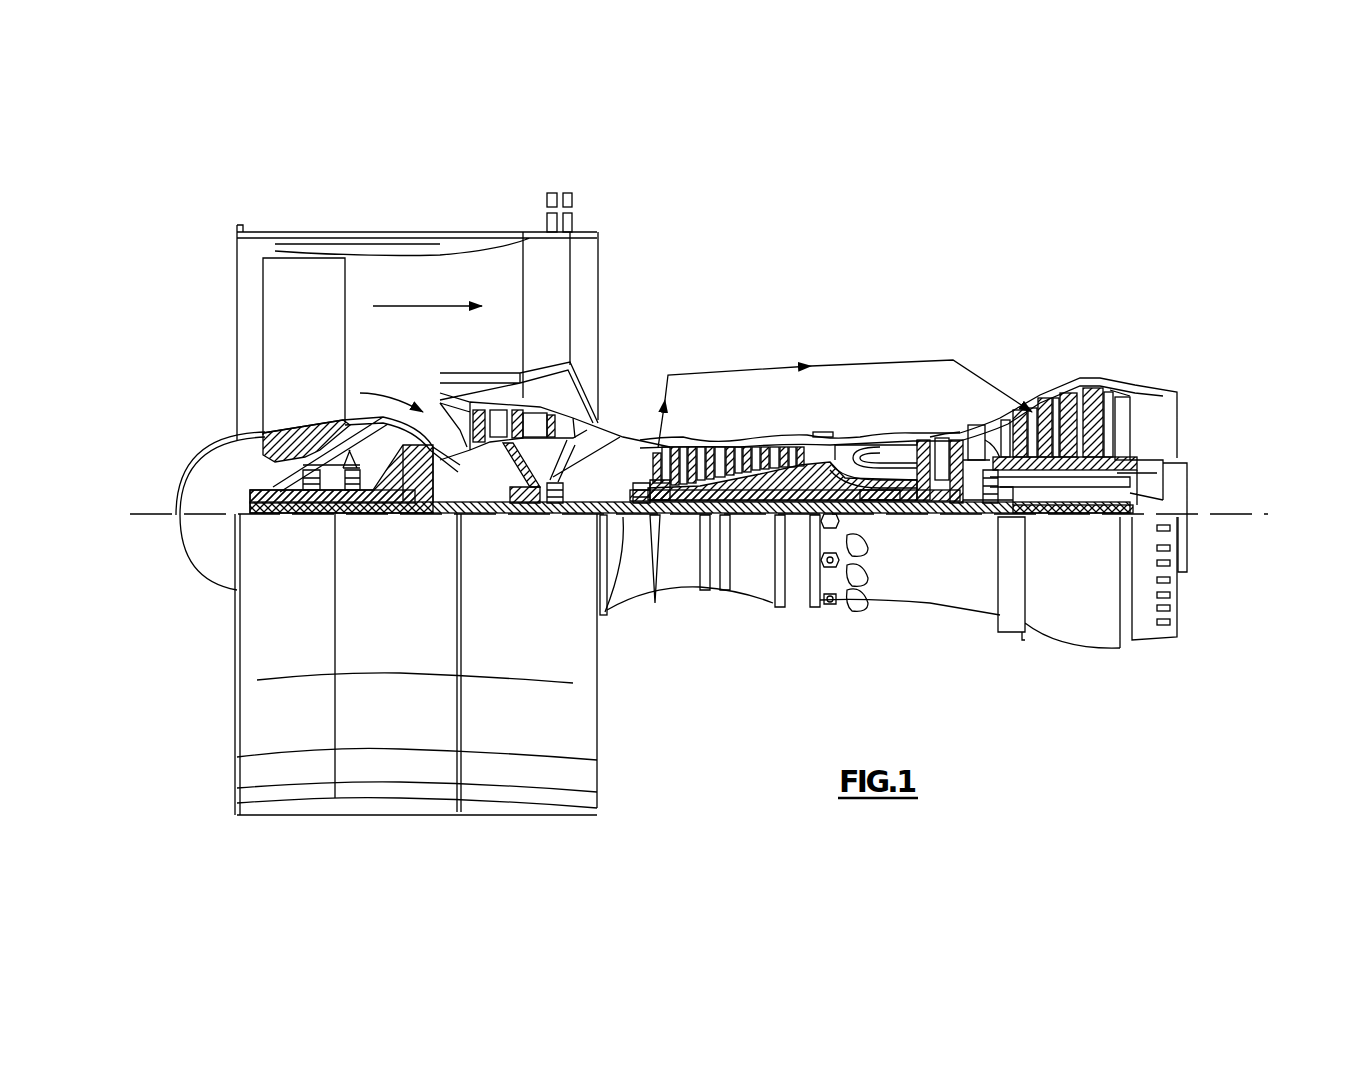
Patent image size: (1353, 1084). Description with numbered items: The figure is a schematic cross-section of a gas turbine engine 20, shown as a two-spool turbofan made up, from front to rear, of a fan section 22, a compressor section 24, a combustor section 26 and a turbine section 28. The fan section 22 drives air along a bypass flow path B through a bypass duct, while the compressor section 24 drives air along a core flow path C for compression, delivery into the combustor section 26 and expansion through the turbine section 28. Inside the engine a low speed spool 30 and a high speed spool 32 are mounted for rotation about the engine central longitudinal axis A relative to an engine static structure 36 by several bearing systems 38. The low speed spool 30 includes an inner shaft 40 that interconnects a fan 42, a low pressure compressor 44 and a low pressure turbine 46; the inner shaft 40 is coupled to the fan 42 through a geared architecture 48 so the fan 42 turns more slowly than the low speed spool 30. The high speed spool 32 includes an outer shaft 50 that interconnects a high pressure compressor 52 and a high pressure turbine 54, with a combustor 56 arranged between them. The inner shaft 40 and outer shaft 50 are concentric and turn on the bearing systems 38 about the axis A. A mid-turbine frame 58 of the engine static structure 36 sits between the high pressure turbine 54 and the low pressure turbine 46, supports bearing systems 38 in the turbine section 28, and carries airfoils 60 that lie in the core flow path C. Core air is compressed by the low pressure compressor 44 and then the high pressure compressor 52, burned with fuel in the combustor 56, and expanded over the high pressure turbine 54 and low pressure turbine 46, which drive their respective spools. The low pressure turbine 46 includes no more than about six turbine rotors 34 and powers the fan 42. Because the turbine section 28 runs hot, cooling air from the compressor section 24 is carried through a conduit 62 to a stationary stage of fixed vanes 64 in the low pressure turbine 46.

The gas turbine engine 20 is at (884, 282).
The fan section 22 is at (445, 206).
The compressor section 24 is at (455, 352).
The combustor section 26 is at (920, 352).
The turbine section 28 is at (925, 352).
The low speed spool 30 is at (757, 522).
The high speed spool 32 is at (799, 468).
The turbine rotors 34 is at (1068, 480).
The engine static structure 36 is at (797, 600).
The bearing systems 38 is at (314, 500).
The inner shaft 40 is at (623, 600).
The fan 42 is at (288, 360).
The low pressure compressor 44 is at (578, 375).
The low pressure turbine 46 is at (1063, 408).
The geared architecture 48 is at (423, 497).
The outer shaft 50 is at (877, 492).
The high pressure compressor 52 is at (727, 470).
The high pressure turbine 54 is at (934, 448).
The combustor 56 is at (872, 460).
The mid-turbine frame 58 is at (979, 426).
The airfoils 60 is at (1010, 487).
The conduit 62 is at (736, 372).
The vanes 64 is at (1032, 420).
The engine central longitudinal axis A is at (1268, 514).
The bypass flow path B is at (410, 305).
The core flow path C is at (360, 393).